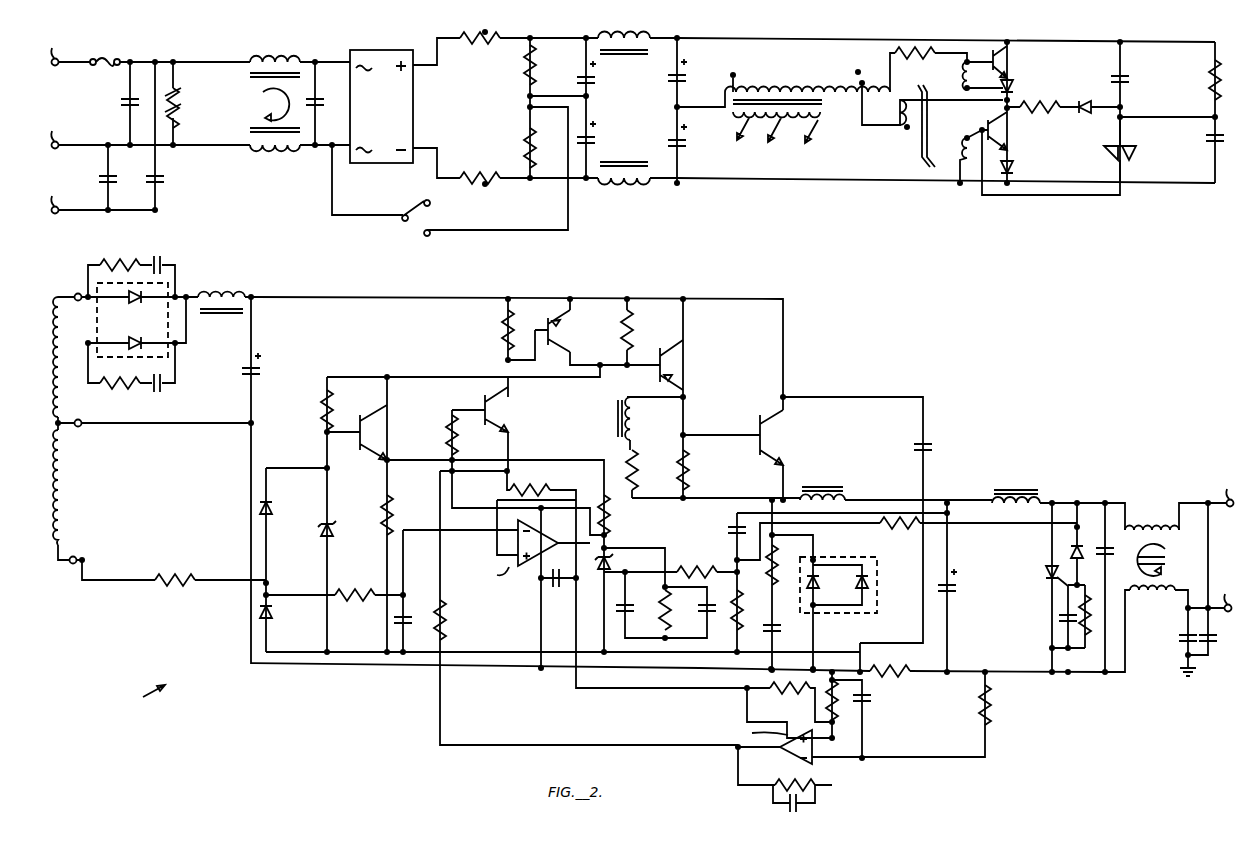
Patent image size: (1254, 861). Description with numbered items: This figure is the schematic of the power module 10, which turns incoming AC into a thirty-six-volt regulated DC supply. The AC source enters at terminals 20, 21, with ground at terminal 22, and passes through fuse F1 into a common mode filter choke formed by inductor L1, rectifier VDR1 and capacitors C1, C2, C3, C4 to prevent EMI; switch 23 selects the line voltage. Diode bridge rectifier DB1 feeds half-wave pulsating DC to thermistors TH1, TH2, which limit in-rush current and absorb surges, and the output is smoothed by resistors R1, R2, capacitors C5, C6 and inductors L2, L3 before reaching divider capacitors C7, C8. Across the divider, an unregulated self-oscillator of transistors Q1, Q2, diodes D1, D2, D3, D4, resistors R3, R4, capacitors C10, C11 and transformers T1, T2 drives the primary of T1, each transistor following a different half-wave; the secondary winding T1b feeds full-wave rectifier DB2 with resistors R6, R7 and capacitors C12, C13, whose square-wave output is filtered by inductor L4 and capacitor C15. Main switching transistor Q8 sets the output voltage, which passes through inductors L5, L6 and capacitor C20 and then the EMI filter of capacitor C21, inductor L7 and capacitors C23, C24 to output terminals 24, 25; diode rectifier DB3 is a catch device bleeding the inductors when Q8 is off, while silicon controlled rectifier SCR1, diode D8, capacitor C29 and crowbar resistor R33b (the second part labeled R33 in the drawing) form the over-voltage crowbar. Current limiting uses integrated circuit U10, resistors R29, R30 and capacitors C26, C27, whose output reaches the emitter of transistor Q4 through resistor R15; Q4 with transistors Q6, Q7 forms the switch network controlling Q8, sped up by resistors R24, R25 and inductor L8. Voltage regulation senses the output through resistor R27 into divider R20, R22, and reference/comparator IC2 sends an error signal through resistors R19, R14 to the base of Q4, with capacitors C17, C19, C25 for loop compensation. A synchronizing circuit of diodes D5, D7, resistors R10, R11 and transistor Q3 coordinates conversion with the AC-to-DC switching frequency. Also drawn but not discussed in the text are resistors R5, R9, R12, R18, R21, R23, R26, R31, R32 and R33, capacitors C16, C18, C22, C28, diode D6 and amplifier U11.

The power module portion 10 is at (141, 696).
The terminal 20 is at (64, 51).
The terminal 21 is at (64, 134).
The terminal 22 is at (64, 199).
The switch 23 is at (404, 221).
The terminal 24 is at (1238, 494).
The terminal 25 is at (1236, 599).
The fuse F1 is at (105, 51).
The capacitor C1 is at (116, 177).
The capacitor C2 is at (164, 136).
The capacitor C3 is at (119, 103).
The capacitor C4 is at (323, 103).
The capacitor C5 is at (597, 75).
The capacitor C6 is at (597, 135).
The divider capacitor C7 is at (688, 71).
The divider capacitor C8 is at (688, 136).
The capacitor C10 is at (1228, 147).
The capacitor C11 is at (1134, 79).
The capacitor C12 is at (159, 256).
The capacitor C13 is at (159, 393).
The capacitor C15 is at (266, 367).
The capacitor C16 is at (415, 609).
The capacitor C17 is at (637, 601).
The capacitor C18 is at (785, 636).
The capacitor C19 is at (725, 523).
The capacitor C20 is at (963, 586).
The capacitor C21 is at (1117, 560).
The capacitor C22 is at (560, 587).
The capacitor C23 is at (1172, 635).
The capacitor C24 is at (1222, 635).
The capacitor C25 is at (694, 603).
The capacitor C26 is at (767, 803).
The capacitor C27 is at (876, 701).
The capacitor C28 is at (938, 447).
The capacitor C29 is at (1047, 617).
The rectifier VDR1 is at (196, 103).
The inductor L1 is at (275, 94).
The inductor L2 is at (624, 32).
The inductor L3 is at (624, 182).
The inductor L4 is at (221, 292).
The inductor L5 is at (822, 482).
The inductor L6 is at (1016, 484).
The inductor L7 is at (1152, 546).
The inductor L8 is at (637, 418).
The diode bridge rectifier circuit DB1 is at (381, 96).
The full-wave rectifier DB2 is at (132, 320).
The diode rectifier DB3 is at (838, 585).
The thermistor TH1 is at (472, 44).
The thermistor TH2 is at (480, 169).
The resistor R1 is at (541, 65).
The resistor R2 is at (541, 148).
The resistor R3 is at (898, 53).
The resistor R4 is at (1226, 80).
The resistor R5 is at (1040, 117).
The resistor R6 is at (120, 255).
The resistor R7 is at (120, 395).
The resistor R9 is at (175, 569).
The resistor R10 is at (341, 410).
The resistor R11 is at (355, 584).
The resistor R12 is at (402, 514).
The resistor R14 is at (467, 435).
The resistor R15 is at (455, 620).
The resistor R18 is at (492, 330).
The resistor R19 is at (619, 515).
The resistor R20 is at (697, 560).
The resistor R21 is at (679, 613).
The resistor R22 is at (752, 610).
The resistor R23 is at (787, 561).
The resistor R24 is at (647, 473).
The resistor R25 is at (698, 473).
The resistor R26 is at (642, 330).
The resistor R27 is at (900, 533).
The resistor R29 is at (785, 698).
The resistor R30 is at (846, 700).
The resistor R31 is at (795, 776).
The resistor R32 is at (1000, 705).
The resistor R33 is at (530, 483).
The resistor R33b is at (1090, 631).
The transformer T1 is at (797, 115).
The transformer secondary T1b is at (56, 421).
The transformer T2 is at (941, 122).
The transistor Q1 is at (1013, 60).
The transistor Q2 is at (1003, 131).
The transistor Q3 is at (362, 432).
The transistor Q4 is at (505, 409).
The transistor Q6 is at (544, 335).
The transistor Q7 is at (685, 365).
The transistor Q8 is at (785, 437).
The diode D1 is at (1019, 83).
The diode D2 is at (1020, 165).
The diode D3 is at (1088, 96).
The diode D4 is at (1132, 150).
The diode D5 is at (277, 497).
The diode D6 is at (277, 615).
The diode D7 is at (337, 521).
The diode D8 is at (1070, 541).
The integrated circuit U10 is at (770, 744).
The operational amplifier U11 is at (514, 550).
The reference/comparator integrated circuit IC2 is at (615, 559).
The silicon controlled rectifier SCR1 is at (1034, 575).